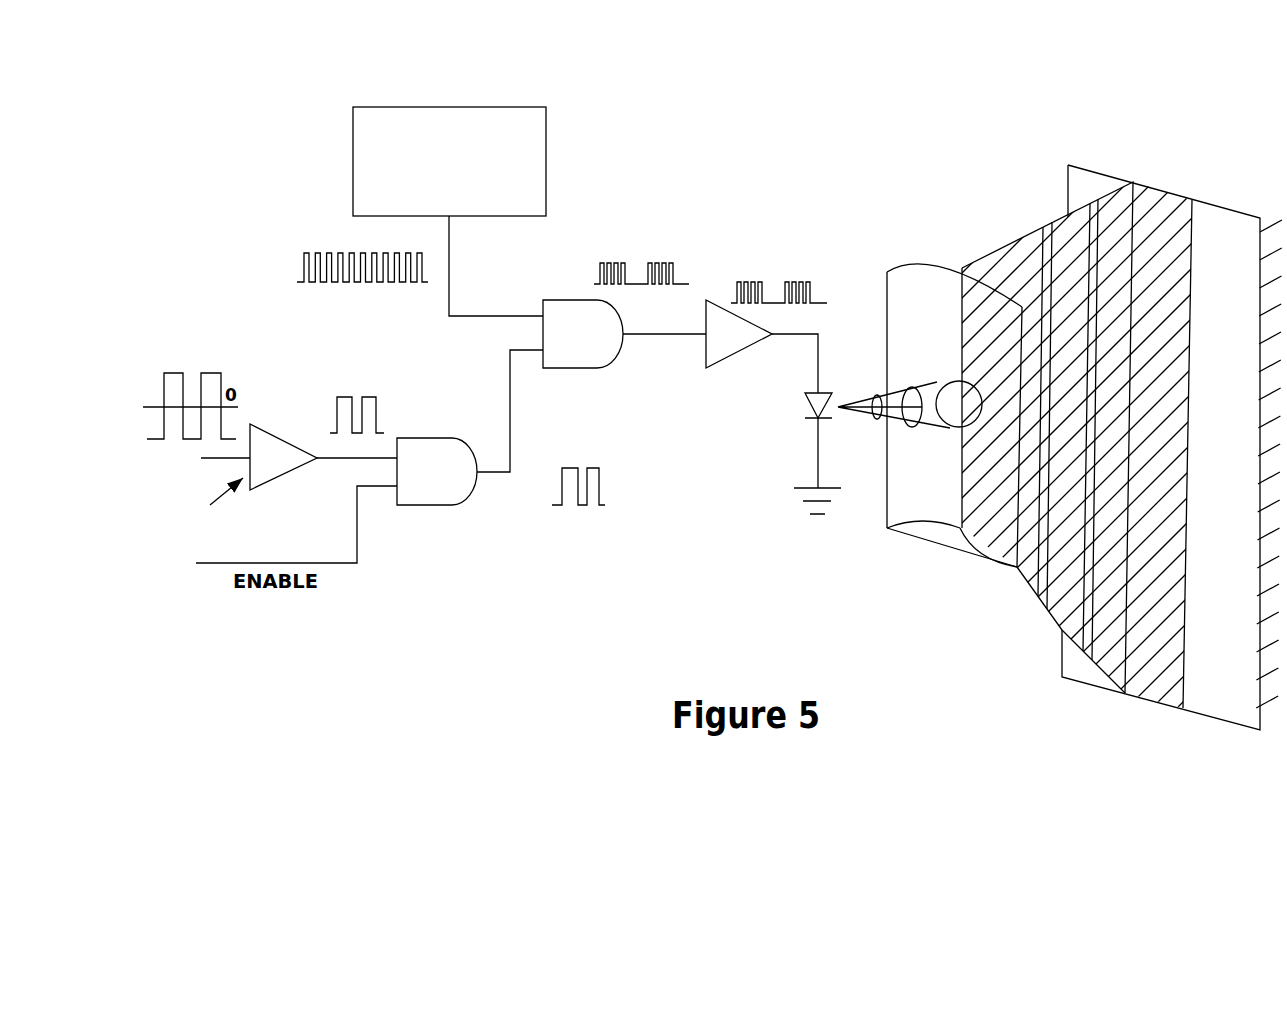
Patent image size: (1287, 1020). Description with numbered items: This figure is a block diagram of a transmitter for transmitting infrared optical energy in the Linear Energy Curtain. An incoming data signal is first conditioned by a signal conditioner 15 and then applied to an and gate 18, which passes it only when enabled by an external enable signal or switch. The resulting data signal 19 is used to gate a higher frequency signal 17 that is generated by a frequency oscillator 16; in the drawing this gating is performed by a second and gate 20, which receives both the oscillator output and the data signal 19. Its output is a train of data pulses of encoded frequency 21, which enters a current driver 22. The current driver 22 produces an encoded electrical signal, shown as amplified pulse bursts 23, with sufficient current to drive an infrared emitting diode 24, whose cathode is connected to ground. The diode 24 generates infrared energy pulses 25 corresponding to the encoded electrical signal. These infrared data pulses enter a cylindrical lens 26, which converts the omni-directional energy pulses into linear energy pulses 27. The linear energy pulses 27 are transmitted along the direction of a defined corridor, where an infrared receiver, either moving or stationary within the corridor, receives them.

The signal conditioner 15 is at (288, 475).
The frequency oscillator 16 is at (449, 151).
The higher frequency signal 17 is at (355, 250).
The and gate 18 is at (437, 471).
The data signal 19 is at (569, 503).
The AND gate 20 is at (583, 334).
The data pulses of encoded frequency 21 is at (660, 258).
The current driver 22 is at (739, 334).
The amplified pulse bursts 23 is at (790, 270).
The infrared emitting diode 24 is at (805, 404).
The infrared energy pulses 25 is at (870, 387).
The cylindrical lens 26 is at (944, 535).
The linear energy pulses 27 is at (1084, 197).